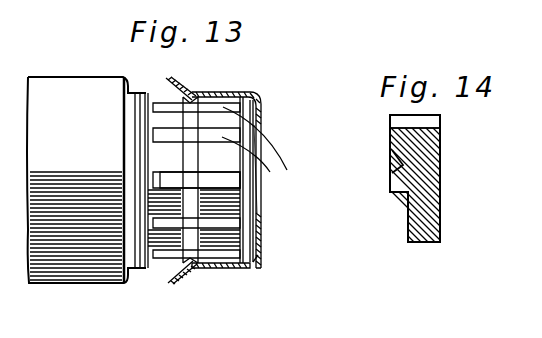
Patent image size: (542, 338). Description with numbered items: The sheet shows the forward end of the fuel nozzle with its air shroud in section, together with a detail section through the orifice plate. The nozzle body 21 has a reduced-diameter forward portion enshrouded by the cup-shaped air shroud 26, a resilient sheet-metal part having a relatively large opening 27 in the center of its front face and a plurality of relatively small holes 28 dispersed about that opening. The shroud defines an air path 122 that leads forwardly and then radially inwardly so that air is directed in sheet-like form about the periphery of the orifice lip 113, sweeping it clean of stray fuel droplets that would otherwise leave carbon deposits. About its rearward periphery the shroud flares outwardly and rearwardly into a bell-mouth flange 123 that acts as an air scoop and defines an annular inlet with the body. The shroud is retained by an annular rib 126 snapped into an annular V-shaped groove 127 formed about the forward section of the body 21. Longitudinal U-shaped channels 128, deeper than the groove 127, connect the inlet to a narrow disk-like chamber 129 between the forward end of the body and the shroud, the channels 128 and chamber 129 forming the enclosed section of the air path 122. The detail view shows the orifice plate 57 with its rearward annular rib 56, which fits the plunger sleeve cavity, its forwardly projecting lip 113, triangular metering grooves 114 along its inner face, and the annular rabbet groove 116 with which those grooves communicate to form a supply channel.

In FIG. 13, the body 21 is at (47, 290).
In FIG. 13, the air shroud 26 is at (253, 92).
In FIG. 13, the opening 27 is at (252, 155).
In FIG. 13, the holes 28 is at (256, 218).
In FIG. 13, the lip 113 is at (250, 176).
In FIG. 13, the air path 122 is at (249, 264).
In FIG. 13, the bell-mouth flange 123 is at (170, 281).
In FIG. 13, the annular rib 126 is at (190, 267).
In FIG. 13, the V-shaped groove 127 is at (193, 155).
In FIG. 13, the channels 128 is at (210, 253).
In FIG. 13, the disk-like chamber 129 is at (258, 255).
In FIG. 14, the annular rib 56 is at (395, 142).
In FIG. 14, the orifice plate 57 is at (438, 203).
In FIG. 14, the metering grooves 114 is at (400, 165).
In FIG. 14, the annular rabbet groove 116 is at (408, 194).